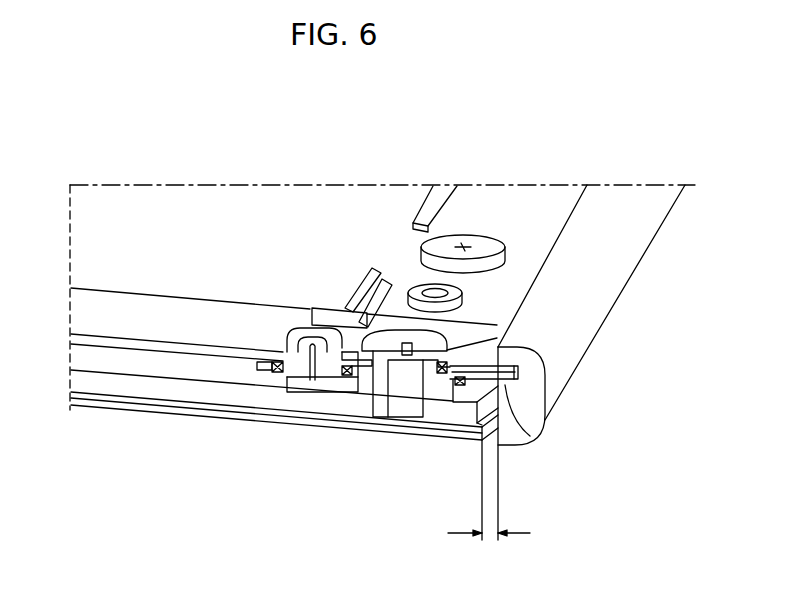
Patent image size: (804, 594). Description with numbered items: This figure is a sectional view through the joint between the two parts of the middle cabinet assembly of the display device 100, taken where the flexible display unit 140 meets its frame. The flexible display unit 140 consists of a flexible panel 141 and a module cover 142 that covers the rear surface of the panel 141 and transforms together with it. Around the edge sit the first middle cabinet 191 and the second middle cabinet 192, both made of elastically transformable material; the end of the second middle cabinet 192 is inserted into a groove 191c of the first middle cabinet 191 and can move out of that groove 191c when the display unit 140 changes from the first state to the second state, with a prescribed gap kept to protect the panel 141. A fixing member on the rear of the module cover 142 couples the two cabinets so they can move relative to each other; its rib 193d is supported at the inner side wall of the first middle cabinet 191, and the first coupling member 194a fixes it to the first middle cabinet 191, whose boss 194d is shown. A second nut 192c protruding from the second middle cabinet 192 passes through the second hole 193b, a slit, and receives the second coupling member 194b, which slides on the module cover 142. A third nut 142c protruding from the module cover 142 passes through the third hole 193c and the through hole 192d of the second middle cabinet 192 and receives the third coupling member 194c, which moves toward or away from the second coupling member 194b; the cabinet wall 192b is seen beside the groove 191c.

The display device 100 is at (133, 160).
The flexible display unit 140 is at (172, 472).
The panel 141 is at (97, 405).
The module cover 142 is at (160, 392).
The third nut 142c is at (423, 372).
The first middle cabinet 191 is at (605, 298).
The groove 191c is at (518, 373).
The second middle cabinet 192 is at (80, 310).
The middle mold side wall 192b is at (507, 383).
The second nut 192c is at (292, 395).
The through hole 192d is at (442, 374).
The second hole 193b is at (277, 376).
The third hole 193c is at (462, 378).
The rib 193d is at (333, 307).
The first coupling member 194a is at (430, 292).
The second coupling member 194b is at (330, 383).
The third coupling member 194c is at (380, 372).
The screw head 194d is at (468, 233).